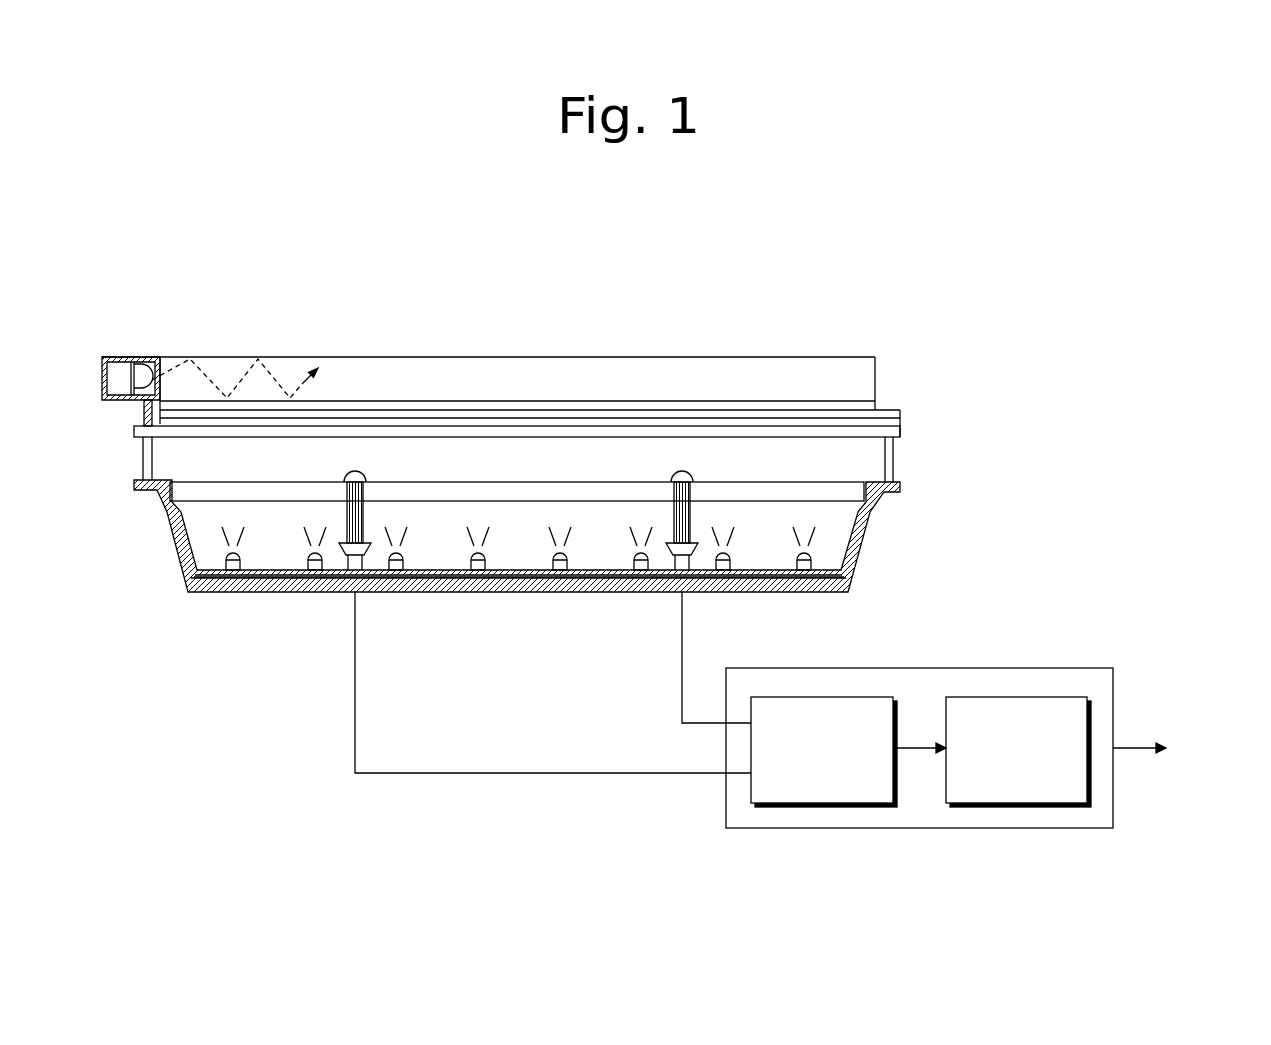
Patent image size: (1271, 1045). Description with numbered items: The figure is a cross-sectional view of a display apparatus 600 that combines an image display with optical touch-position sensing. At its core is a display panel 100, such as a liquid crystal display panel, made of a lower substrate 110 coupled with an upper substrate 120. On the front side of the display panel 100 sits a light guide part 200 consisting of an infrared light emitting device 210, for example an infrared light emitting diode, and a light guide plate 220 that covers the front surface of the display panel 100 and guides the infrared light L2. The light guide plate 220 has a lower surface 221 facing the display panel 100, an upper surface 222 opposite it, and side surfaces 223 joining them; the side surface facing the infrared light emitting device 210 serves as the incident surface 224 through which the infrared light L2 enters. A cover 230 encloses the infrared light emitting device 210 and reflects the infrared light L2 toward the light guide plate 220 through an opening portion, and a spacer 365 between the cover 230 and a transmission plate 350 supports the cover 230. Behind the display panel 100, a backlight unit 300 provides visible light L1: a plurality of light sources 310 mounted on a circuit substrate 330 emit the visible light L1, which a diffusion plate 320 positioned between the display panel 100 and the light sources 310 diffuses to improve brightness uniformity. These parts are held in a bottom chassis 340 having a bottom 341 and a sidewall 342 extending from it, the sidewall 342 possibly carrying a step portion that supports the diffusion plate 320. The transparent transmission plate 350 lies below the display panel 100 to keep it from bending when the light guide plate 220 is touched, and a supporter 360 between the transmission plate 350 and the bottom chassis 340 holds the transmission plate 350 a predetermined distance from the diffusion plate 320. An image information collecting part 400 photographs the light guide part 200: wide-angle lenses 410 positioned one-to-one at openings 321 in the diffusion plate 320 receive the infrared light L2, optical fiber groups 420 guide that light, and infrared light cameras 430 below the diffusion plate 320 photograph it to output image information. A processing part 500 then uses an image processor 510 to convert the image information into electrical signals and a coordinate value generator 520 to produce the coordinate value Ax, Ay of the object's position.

The display panel 100 is at (990, 385).
The lower substrate 110 is at (903, 420).
The upper substrate 120 is at (870, 408).
The light guide part 200 is at (212, 284).
The infrared light emitting device 210 is at (113, 357).
The light guide plate 220 is at (185, 360).
The lower surface 221 is at (597, 400).
The upper surface 222 is at (520, 360).
The side surfaces 223 is at (871, 370).
The incident surface 224 is at (233, 360).
The cover 230 is at (136, 360).
The backlight unit 300 is at (990, 455).
The light sources 310 is at (808, 562).
The diffusion plate 320 is at (832, 497).
The openings 321 is at (372, 492).
The circuit substrate 330 is at (840, 578).
The bottom chassis 340 is at (95, 550).
The bottom 341 is at (223, 590).
The sidewall 342 is at (180, 548).
The transmission plate 350 is at (903, 437).
The supporter 360 is at (147, 458).
The spacer 365 is at (143, 412).
The image information collecting part 400 is at (340, 675).
The wide-angle lenses 410 is at (345, 475).
The optical fiber groups 420 is at (340, 522).
The infrared light cameras 430 is at (340, 545).
The processing part 500 is at (1012, 668).
The image processor 510 is at (858, 828).
The coordinate value generator 520 is at (1053, 828).
The display apparatus 600 is at (931, 291).
The visible light L1 is at (486, 562).
The infrared light L2 is at (305, 382).